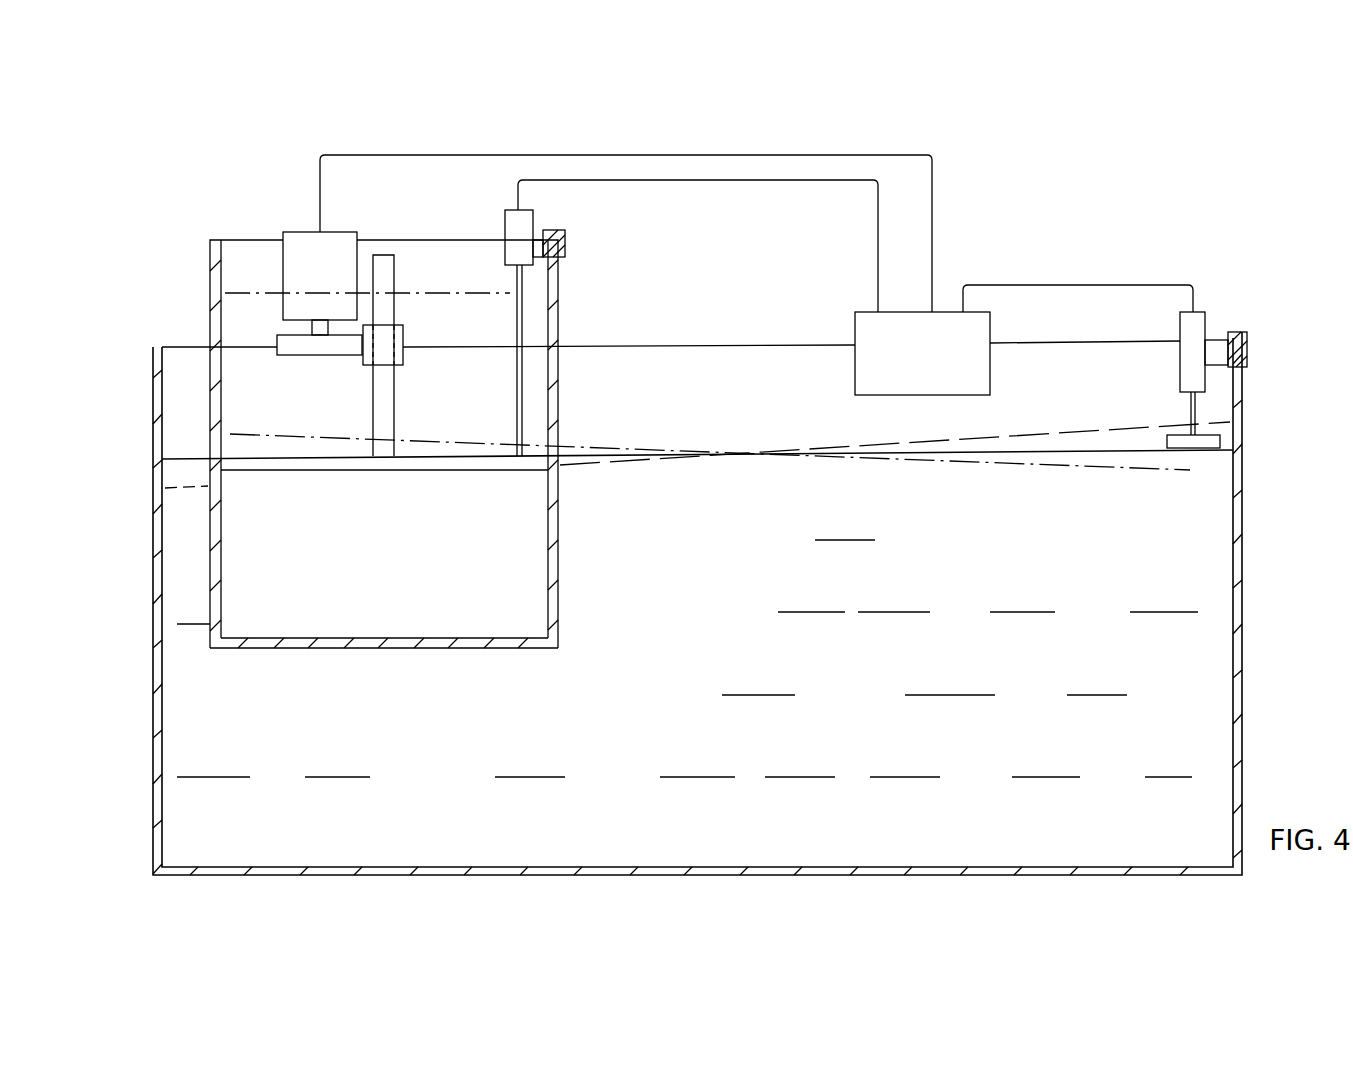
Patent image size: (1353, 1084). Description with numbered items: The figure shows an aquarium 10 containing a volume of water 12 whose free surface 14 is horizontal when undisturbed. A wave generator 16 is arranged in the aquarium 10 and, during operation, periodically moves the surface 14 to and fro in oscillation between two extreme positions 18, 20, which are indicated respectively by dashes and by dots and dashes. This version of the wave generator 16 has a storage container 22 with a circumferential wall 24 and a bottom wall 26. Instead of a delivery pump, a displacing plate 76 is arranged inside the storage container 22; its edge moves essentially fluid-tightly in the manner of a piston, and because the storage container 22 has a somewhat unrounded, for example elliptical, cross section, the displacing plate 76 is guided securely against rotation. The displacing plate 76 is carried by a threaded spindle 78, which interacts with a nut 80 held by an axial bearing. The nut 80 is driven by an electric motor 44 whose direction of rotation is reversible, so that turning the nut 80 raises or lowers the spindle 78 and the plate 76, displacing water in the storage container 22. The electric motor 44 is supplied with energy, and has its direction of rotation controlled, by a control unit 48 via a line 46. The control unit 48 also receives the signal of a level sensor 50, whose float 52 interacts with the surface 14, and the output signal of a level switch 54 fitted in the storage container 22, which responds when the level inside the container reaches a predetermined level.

The aquarium 10 is at (1245, 693).
The volume of water 12 is at (1097, 678).
The free surface 14 is at (1020, 453).
The wave generator 16 is at (177, 255).
The extreme position 18 is at (1093, 438).
The extreme position 20 is at (930, 460).
The storage container 22 is at (300, 488).
The circumferential wall 24 is at (210, 400).
The bottom wall 26 is at (258, 648).
The electric motor 44 is at (293, 253).
The line 46 is at (343, 156).
The control unit 48 is at (940, 366).
The level sensor 50 is at (1210, 308).
The float 52 is at (1185, 448).
The level switch 54 is at (505, 247).
The displacing plate 76 is at (548, 465).
The threaded spindle 78 is at (385, 390).
The nut 80 is at (453, 343).